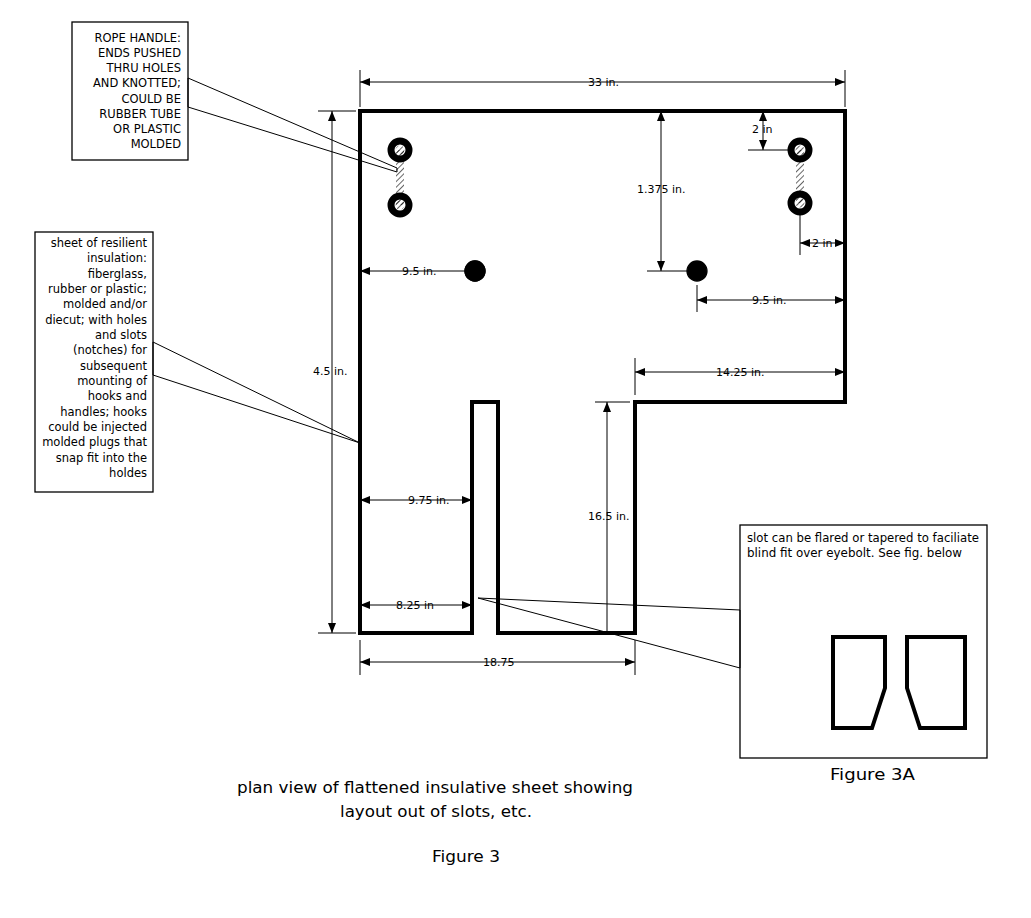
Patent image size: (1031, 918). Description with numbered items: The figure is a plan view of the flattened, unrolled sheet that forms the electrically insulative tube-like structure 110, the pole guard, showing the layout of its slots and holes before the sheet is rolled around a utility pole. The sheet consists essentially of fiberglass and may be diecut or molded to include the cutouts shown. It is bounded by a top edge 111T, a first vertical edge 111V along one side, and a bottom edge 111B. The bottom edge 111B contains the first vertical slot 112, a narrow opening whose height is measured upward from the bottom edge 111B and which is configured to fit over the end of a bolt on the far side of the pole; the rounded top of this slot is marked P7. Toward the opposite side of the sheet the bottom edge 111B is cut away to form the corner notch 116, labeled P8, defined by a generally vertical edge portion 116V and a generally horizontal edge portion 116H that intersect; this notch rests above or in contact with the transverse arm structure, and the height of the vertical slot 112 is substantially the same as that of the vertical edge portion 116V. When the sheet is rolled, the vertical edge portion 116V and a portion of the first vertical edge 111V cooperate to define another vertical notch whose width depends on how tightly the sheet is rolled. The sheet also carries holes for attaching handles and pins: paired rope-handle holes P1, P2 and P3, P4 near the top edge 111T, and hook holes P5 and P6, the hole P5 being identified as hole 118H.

The electrically insulative tube-like structure 110 is at (551, 335).
The top edge 111T is at (602, 79).
The first vertical edge 111V is at (358, 470).
The bottom edge 111B is at (388, 678).
The first vertical slot 112 is at (446, 571).
The corner notch 116 is at (755, 517).
The generally horizontal edge portion 116H is at (764, 423).
The generally vertical edge portion 116V is at (677, 517).
The hole 118H is at (367, 294).
The rope handle hole P1 is at (435, 155).
The rope handle hole P2 is at (435, 187).
The rope handle hole P3 is at (837, 139).
The rope handle hole P4 is at (837, 181).
The hook hole P5 is at (499, 292).
The hook hole P6 is at (733, 259).
The slot top P7 is at (511, 382).
The cutout P8 is at (740, 517).